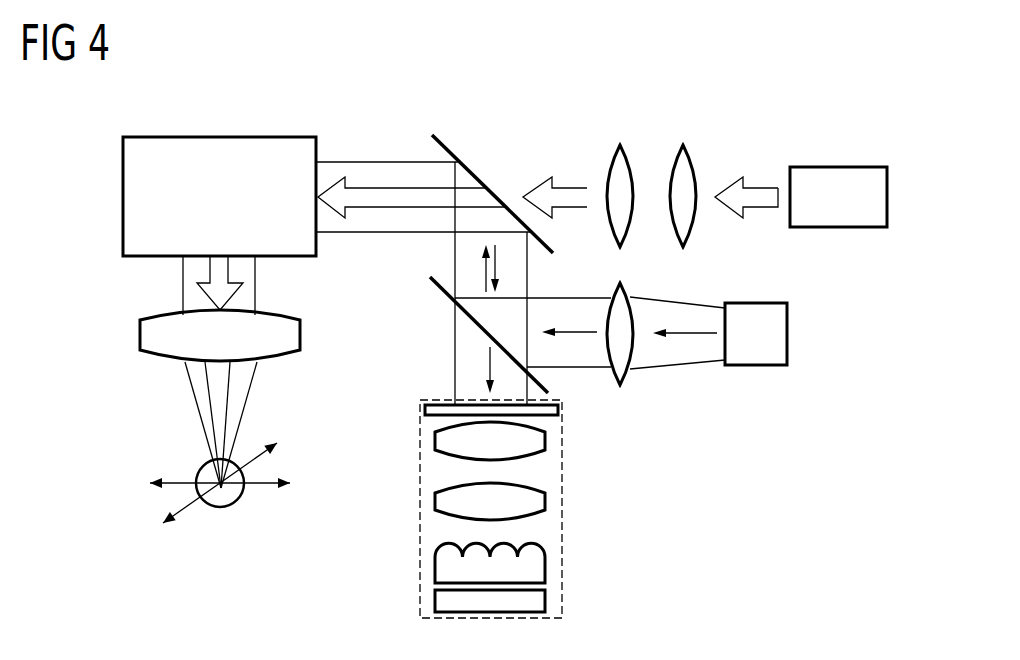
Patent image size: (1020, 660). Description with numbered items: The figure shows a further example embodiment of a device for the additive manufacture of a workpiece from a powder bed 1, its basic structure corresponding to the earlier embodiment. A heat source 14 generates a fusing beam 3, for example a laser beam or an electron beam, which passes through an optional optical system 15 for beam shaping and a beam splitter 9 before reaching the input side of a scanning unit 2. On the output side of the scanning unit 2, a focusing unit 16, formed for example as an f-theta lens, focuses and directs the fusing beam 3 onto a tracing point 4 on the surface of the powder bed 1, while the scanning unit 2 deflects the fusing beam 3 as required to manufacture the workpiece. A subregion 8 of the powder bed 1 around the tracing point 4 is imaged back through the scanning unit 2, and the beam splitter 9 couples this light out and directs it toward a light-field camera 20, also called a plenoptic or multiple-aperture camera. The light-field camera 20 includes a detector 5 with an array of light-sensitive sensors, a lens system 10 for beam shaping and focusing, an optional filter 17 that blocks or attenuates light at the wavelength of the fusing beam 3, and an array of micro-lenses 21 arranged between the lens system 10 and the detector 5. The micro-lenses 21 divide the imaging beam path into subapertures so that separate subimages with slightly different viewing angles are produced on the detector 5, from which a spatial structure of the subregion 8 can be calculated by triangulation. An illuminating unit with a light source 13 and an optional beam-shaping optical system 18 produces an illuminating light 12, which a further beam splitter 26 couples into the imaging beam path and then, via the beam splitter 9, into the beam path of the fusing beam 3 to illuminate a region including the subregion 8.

The powder bed 1 is at (268, 565).
The scanning unit 2 is at (123, 192).
The fusing beam 3 is at (210, 272).
The tracing point 4 is at (220, 508).
The detector 5 is at (435, 600).
The subregion 8 is at (243, 497).
The beam splitter 9 is at (472, 168).
The lens system 10 is at (423, 422).
The illuminating light 12 is at (585, 369).
The light source 13 is at (788, 335).
The heat source 14 is at (838, 167).
The optical system 15 is at (697, 138).
The focusing unit 16 is at (140, 333).
The filter 17 is at (425, 411).
The beam-shaping optical system 18 is at (620, 387).
The light-field camera 20 is at (420, 528).
The micro-lenses 21 is at (435, 568).
The further beam splitter 26 is at (441, 286).